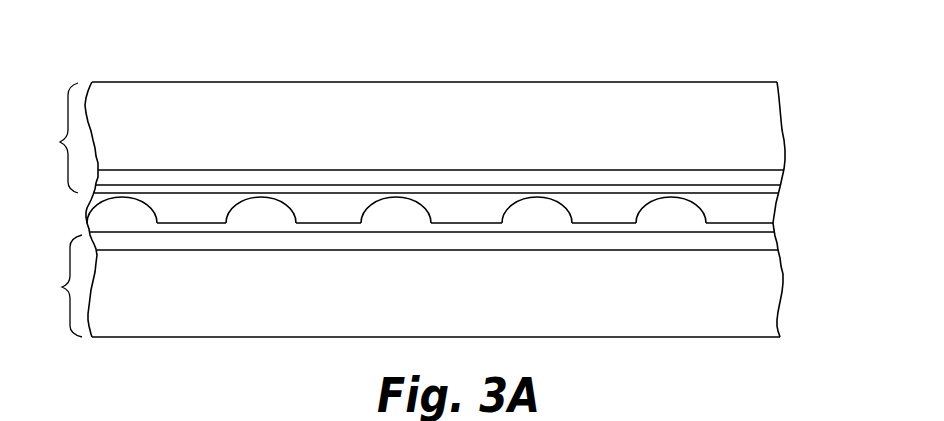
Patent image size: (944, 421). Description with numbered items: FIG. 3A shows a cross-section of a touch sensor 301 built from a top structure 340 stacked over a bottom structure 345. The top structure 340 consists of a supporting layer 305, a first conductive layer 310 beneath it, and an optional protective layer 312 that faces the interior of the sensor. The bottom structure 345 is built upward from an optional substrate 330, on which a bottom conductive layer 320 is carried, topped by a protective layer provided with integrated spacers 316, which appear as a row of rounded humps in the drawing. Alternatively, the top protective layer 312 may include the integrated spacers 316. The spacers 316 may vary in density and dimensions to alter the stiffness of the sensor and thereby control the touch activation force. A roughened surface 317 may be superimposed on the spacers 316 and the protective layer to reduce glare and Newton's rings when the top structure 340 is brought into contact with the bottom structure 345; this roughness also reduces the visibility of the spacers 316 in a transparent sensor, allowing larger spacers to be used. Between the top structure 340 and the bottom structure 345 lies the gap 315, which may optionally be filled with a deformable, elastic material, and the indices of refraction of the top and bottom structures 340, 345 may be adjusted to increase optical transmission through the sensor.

The display device 301 is at (592, 82).
The supporting layer 305 is at (722, 88).
The first conductive layer 310 is at (773, 178).
The protective layer 312 is at (776, 190).
The gap 315 is at (478, 180).
The integrated spacers 316 is at (238, 212).
The roughened surface 317 is at (322, 223).
The bottom conductive layer 320 is at (768, 242).
The substrate 330 is at (710, 327).
The top structure 340 is at (46, 138).
The bottom structure 345 is at (48, 286).